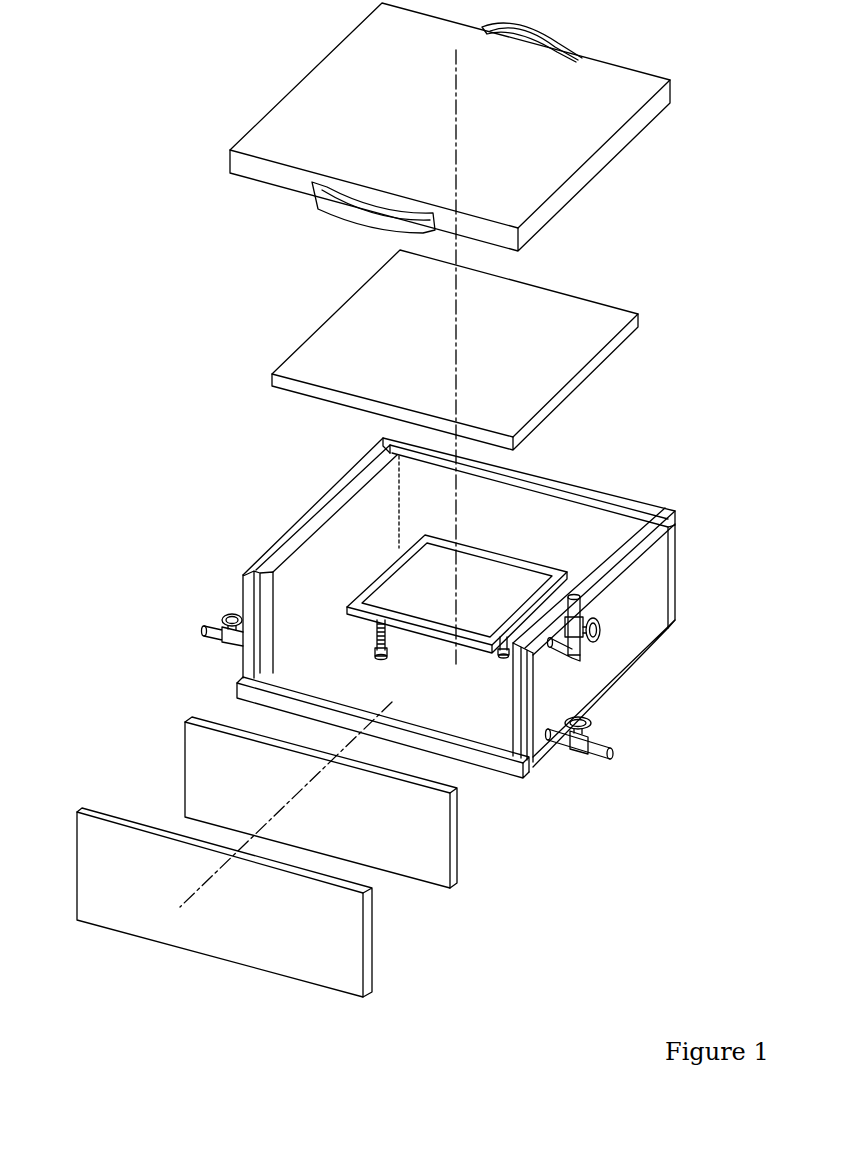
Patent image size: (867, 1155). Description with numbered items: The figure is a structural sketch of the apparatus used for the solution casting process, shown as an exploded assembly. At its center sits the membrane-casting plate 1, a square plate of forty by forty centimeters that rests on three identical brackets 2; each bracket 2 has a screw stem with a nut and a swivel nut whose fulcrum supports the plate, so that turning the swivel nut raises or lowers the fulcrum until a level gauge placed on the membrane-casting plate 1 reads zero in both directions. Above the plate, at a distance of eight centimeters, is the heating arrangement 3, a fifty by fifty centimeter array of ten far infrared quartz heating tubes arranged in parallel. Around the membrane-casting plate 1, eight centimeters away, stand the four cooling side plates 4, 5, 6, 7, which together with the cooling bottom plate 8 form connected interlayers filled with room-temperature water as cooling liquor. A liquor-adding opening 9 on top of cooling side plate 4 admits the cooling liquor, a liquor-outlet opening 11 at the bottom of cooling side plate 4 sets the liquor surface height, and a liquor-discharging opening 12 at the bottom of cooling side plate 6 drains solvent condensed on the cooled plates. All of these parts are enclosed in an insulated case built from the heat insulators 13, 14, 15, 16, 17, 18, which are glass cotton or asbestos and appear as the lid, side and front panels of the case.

The membrane-casting plate 1 is at (492, 575).
The bracket 2 is at (377, 622).
The heating arrangement 3 is at (568, 300).
The cooling side plate 4 is at (613, 550).
The cooling side plate 5 is at (538, 478).
The cooling side plate 6 is at (340, 507).
The cooling side plate 7 is at (198, 770).
The cooling bottom plate 8 is at (470, 720).
The liquor-adding opening 9 is at (581, 610).
The liquor-outlet opening 11 is at (600, 740).
The liquor-discharging opening 12 is at (215, 612).
The heat insulator 13 is at (603, 163).
The heat insulator 14 is at (620, 653).
The heat insulator 15 is at (627, 497).
The heat insulator 16 is at (283, 538).
The heat insulator 17 is at (352, 947).
The heat insulator 18 is at (237, 690).